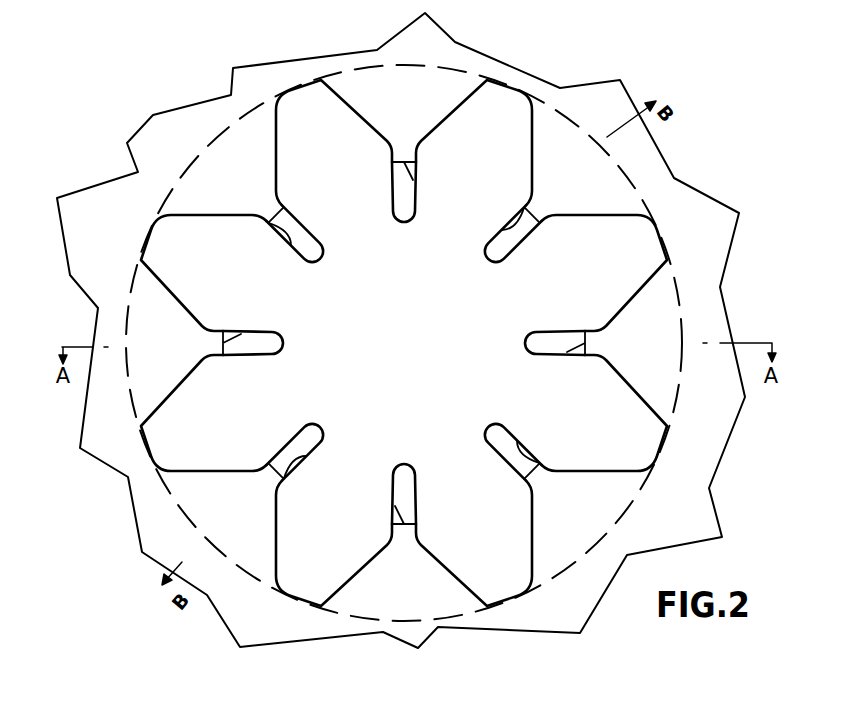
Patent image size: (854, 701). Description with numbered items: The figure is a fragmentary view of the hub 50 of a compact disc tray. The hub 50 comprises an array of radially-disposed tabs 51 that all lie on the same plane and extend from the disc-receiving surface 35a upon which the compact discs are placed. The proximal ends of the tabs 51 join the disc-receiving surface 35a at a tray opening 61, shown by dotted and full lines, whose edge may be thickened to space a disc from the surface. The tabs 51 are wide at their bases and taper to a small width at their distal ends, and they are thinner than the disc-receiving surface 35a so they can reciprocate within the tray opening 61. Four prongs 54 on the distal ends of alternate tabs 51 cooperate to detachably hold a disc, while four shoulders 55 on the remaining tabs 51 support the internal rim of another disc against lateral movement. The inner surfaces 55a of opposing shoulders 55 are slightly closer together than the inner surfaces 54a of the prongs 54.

The disc-receiving surface 35a is at (113, 230).
The hub 50 is at (587, 118).
The tabs 51 is at (208, 198).
The prongs 54 is at (282, 346).
The inner surfaces of the prongs 54a is at (416, 182).
The shoulders 55 is at (318, 250).
The inner surfaces of the shoulders 55a is at (292, 218).
The tray opening 61 is at (180, 172).